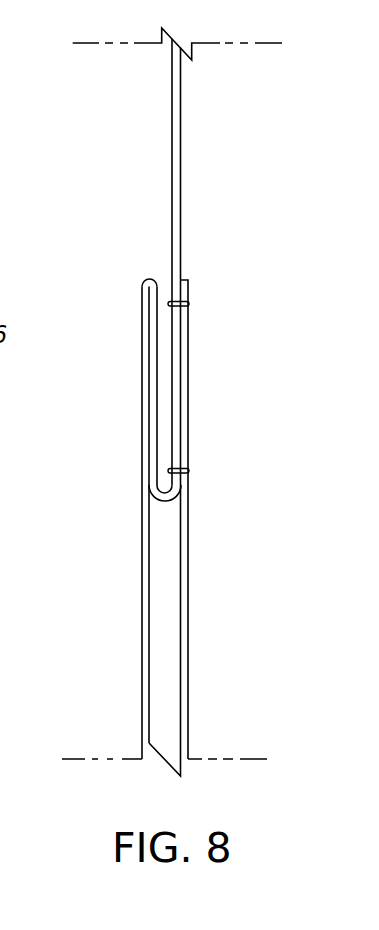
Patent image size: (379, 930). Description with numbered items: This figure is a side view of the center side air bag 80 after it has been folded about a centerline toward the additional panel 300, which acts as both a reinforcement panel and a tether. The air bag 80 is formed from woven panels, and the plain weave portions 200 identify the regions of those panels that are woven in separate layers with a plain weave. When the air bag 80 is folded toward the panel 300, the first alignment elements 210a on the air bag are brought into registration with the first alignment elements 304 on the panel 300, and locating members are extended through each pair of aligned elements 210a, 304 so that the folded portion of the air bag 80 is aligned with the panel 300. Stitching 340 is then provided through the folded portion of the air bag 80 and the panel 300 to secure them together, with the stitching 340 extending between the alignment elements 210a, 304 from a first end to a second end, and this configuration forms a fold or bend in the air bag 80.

The center side air bag 80 is at (121, 693).
The plain weave portions 200 is at (142, 549).
The additional panel 300 is at (202, 618).
The stitching 340 is at (163, 288).
The first alignment elements 210a is at (257, 395).
The first alignment elements 304 is at (201, 304).